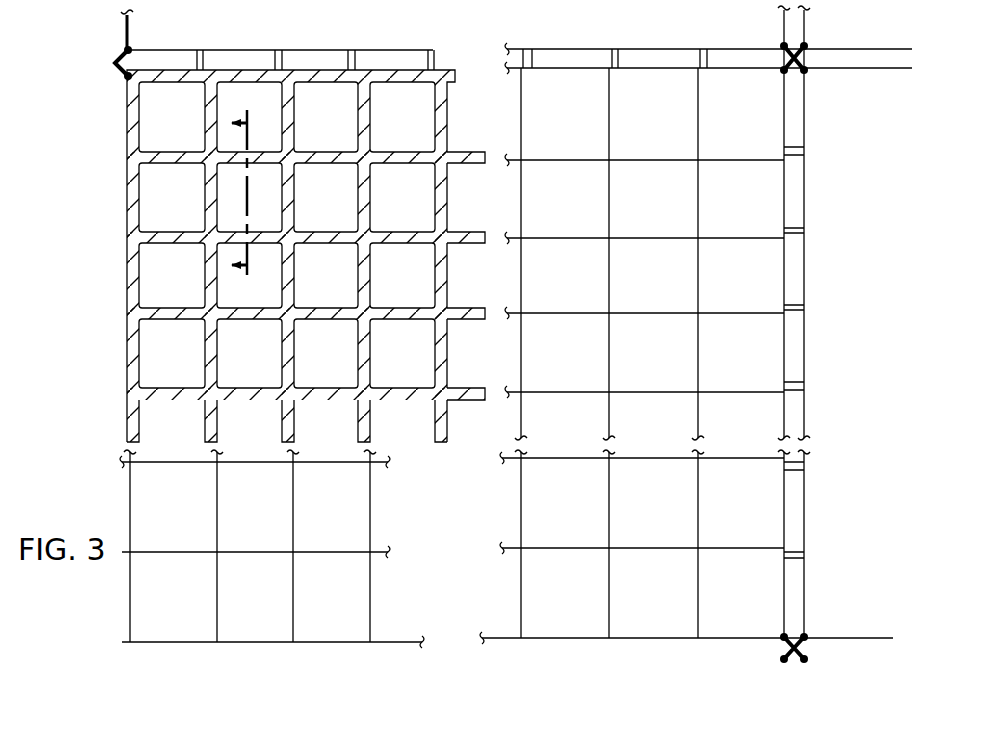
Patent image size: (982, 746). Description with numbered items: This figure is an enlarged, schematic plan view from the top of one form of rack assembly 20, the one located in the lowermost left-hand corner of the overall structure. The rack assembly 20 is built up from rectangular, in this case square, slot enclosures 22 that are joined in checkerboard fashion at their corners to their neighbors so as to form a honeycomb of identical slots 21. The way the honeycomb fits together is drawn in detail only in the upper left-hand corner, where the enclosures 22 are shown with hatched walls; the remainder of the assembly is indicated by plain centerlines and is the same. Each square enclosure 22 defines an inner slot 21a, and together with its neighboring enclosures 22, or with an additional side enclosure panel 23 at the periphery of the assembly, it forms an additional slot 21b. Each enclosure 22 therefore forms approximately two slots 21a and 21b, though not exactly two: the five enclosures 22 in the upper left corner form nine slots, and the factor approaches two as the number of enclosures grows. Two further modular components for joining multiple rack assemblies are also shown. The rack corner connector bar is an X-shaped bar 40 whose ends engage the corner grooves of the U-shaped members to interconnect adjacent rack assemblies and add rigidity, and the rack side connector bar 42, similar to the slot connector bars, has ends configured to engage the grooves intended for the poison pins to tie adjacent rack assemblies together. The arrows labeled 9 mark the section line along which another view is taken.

The rack assembly 20 is at (447, 224).
The slot 21 is at (158, 509).
The inner slot 21a is at (156, 121).
The additional slot 21b is at (242, 110).
The slot enclosure 22 is at (322, 70).
The side enclosure panel 23 is at (250, 78).
The X-shaped bar 40 is at (797, 64).
The rack side connector bar 42 is at (194, 50).
The section line 9- 9 is at (255, 194).